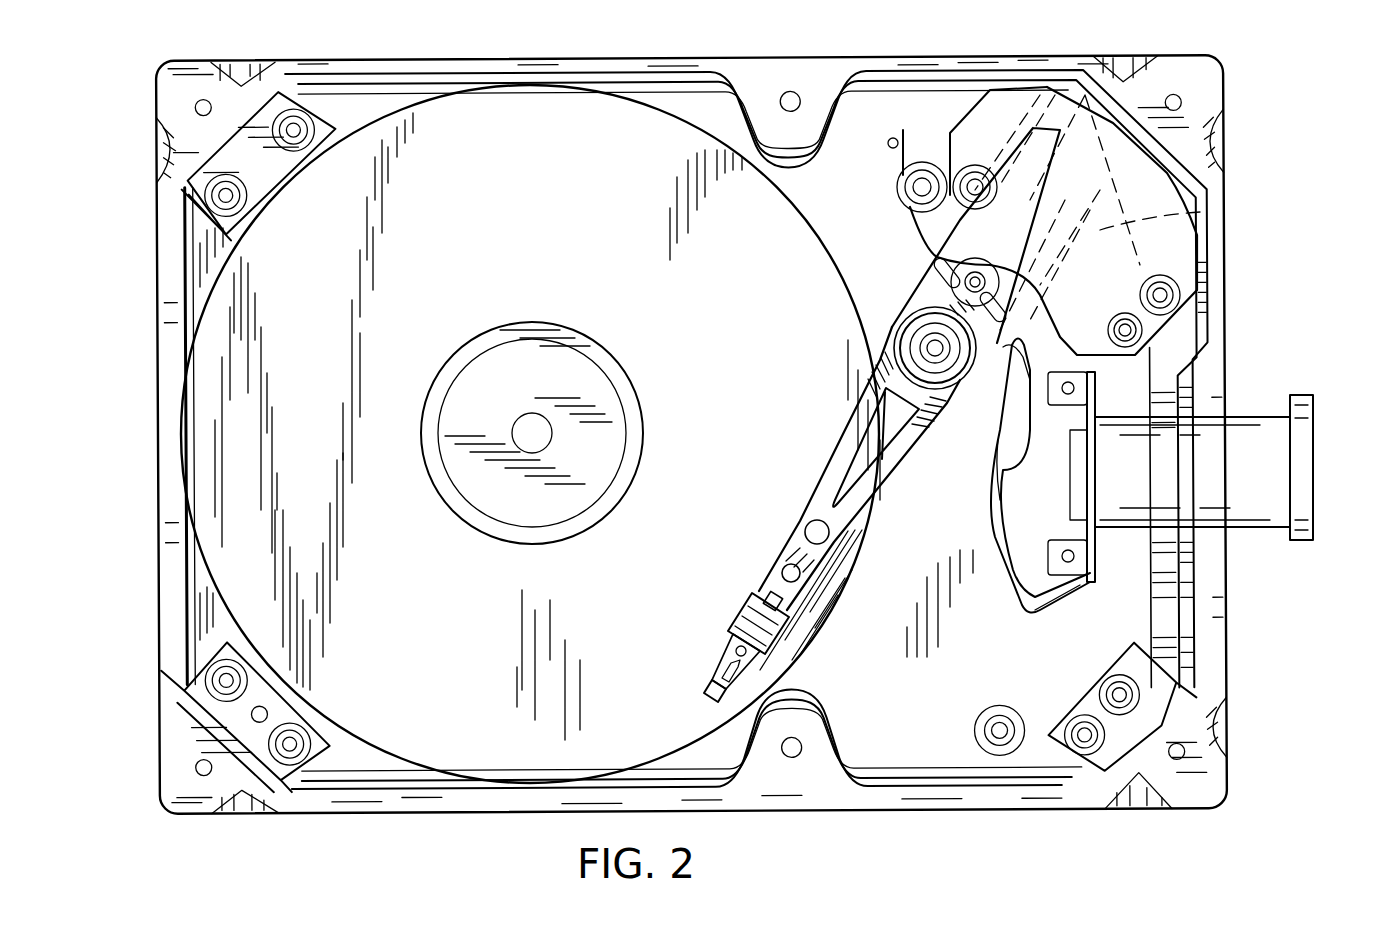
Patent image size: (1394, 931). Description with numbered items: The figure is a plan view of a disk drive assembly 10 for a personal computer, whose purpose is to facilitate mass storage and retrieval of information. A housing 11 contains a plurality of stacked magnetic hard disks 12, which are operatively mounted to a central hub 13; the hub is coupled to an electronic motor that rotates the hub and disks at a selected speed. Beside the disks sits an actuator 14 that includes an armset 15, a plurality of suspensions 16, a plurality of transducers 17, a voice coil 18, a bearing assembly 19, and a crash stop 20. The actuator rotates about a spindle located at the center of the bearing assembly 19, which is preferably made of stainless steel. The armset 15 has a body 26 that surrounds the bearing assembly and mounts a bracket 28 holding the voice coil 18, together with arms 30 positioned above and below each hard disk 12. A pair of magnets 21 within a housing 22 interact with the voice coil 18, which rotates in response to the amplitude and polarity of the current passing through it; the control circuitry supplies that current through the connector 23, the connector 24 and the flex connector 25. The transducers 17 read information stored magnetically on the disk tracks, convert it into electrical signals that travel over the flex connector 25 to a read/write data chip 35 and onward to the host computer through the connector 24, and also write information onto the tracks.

The disk drive assembly 10 is at (1242, 116).
The housing 11 is at (637, 67).
The magnetic hard disks 12 is at (418, 217).
The central hub 13 is at (520, 390).
The actuator 14 is at (822, 473).
The armset 15 is at (890, 373).
The suspensions 16 is at (747, 620).
The transducers 17 is at (713, 693).
The voice coil 18 is at (1075, 92).
The bearing assembly 19 is at (940, 358).
The crash stop 20 is at (908, 175).
The magnets 21 is at (1150, 240).
The housing 22 is at (1160, 359).
The connector 23 is at (1308, 450).
The connector 24 is at (1175, 489).
The flex connector 25 is at (993, 528).
The body 26 is at (895, 320).
The bracket 28 is at (1040, 212).
The arms 30 is at (820, 510).
The read/write data chip 35 is at (1072, 468).